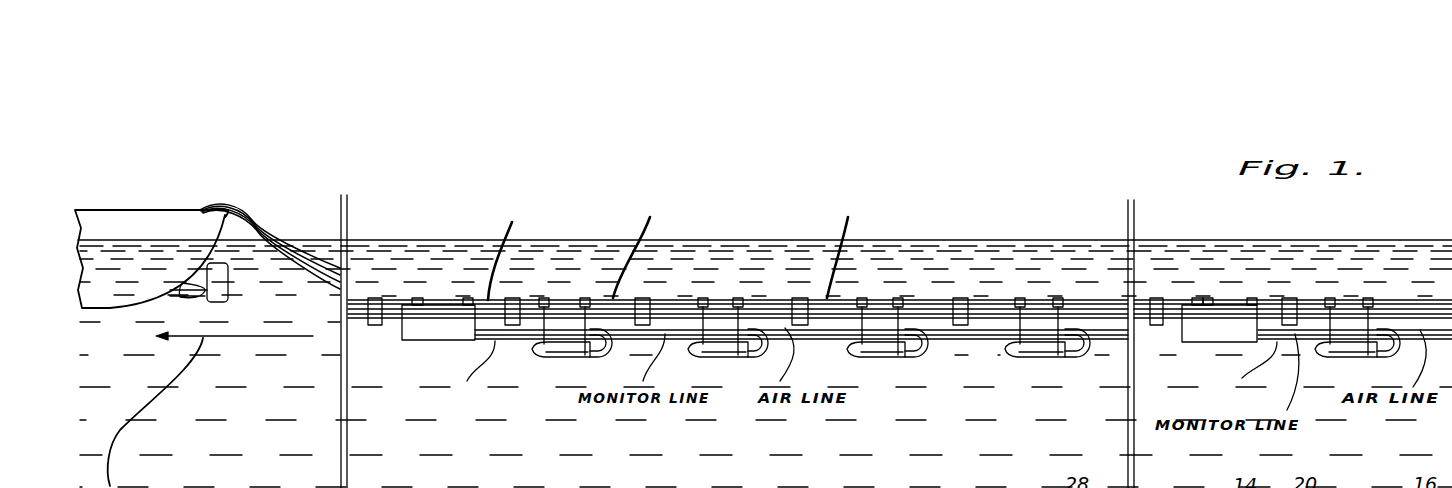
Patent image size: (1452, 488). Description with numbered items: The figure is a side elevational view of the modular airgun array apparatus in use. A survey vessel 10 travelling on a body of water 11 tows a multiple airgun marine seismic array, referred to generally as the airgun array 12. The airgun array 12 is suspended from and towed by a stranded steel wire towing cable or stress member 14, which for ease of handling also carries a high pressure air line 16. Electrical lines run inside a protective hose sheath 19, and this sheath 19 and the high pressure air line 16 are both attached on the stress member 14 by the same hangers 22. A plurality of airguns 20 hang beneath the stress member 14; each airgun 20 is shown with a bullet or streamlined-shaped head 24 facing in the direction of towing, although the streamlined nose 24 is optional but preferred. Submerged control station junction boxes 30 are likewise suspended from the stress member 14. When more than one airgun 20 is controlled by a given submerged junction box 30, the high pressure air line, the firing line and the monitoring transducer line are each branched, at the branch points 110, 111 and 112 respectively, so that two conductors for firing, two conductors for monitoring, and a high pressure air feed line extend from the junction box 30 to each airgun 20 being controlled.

The survey vessel 10 is at (142, 200).
The body of water 11 is at (317, 246).
The airgun array 12 is at (1021, 216).
The towing cable 14 is at (497, 298).
The high pressure air line 16 is at (601, 300).
The protective hose sheath 19 is at (756, 313).
The airguns 20 is at (592, 363).
The hangers 22 is at (372, 298).
The streamlined head 24 is at (543, 344).
The submerged control station junction box 30 is at (452, 333).
The high pressure air line branch 110 is at (616, 350).
The firing line branch 111 is at (778, 350).
The monitoring transducer line branch 112 is at (935, 342).